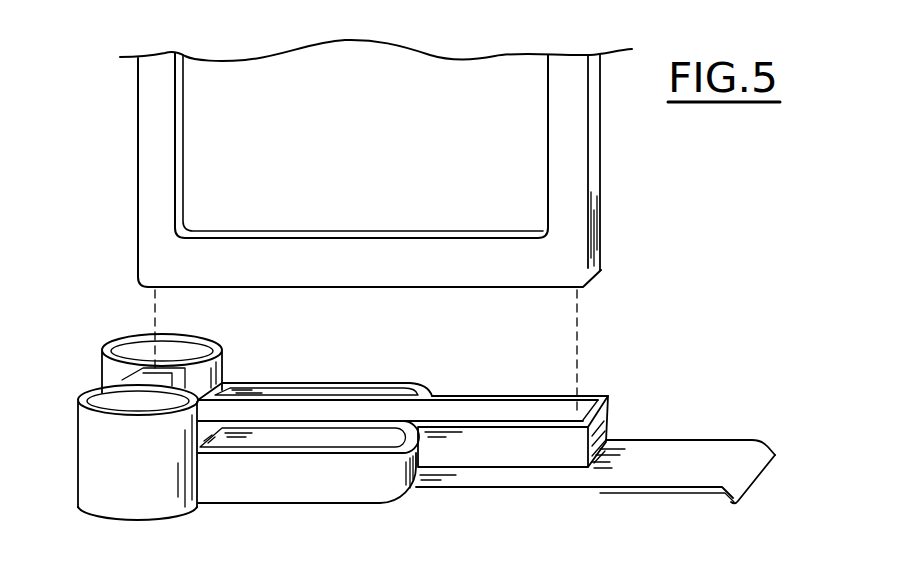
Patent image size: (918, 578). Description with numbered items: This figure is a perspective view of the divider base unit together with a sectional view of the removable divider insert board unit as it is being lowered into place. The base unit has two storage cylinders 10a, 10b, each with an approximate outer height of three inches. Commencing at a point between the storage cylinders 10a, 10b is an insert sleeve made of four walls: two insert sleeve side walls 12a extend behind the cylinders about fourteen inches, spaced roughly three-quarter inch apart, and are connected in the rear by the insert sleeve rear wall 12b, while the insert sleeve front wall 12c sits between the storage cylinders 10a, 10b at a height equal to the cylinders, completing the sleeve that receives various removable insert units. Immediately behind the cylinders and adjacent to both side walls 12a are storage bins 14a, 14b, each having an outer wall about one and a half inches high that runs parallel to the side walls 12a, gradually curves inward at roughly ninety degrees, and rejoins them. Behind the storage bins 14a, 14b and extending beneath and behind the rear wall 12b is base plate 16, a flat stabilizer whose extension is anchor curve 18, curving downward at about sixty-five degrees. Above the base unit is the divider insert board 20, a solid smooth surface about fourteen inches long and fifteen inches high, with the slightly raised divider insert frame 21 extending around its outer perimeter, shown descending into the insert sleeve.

The storage cylinder 10a is at (185, 352).
The storage cylinder 10b is at (138, 502).
The insert sleeve side wall 12a is at (462, 423).
The insert sleeve rear wall 12b is at (608, 412).
The insert sleeve front wall 12c is at (140, 374).
The storage bin 14a is at (303, 393).
The storage bin 14b is at (340, 487).
The base plate 16 is at (640, 455).
The anchor curve 18 is at (752, 463).
The divider insert board 20 is at (527, 178).
The divider insert frame 21 is at (567, 258).